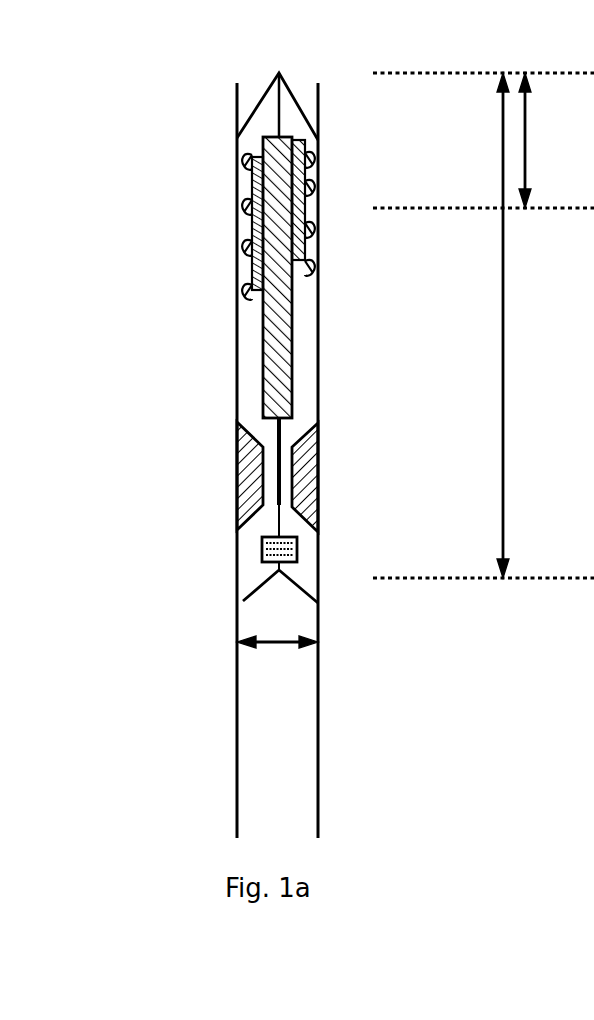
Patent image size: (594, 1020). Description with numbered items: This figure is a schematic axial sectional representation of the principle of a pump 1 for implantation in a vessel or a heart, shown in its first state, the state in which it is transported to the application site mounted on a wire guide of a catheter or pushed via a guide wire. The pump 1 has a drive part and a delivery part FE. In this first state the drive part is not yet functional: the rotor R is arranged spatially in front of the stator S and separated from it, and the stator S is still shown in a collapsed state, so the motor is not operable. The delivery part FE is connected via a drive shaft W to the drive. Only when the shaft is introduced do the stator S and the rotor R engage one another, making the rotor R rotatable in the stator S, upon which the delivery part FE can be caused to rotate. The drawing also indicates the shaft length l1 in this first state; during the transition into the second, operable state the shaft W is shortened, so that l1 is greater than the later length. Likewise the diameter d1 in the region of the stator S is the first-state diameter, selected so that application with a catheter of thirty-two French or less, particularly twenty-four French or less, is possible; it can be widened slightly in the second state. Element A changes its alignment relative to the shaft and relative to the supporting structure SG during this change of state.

The pump 1 is at (345, 134).
The element A is at (242, 84).
The delivery part FE is at (225, 226).
The rotor R is at (240, 337).
The drive shaft W is at (300, 426).
The stator S is at (240, 484).
The supporting structure SG is at (223, 550).
The length l1 is at (518, 325).
The diameter d1 is at (277, 664).